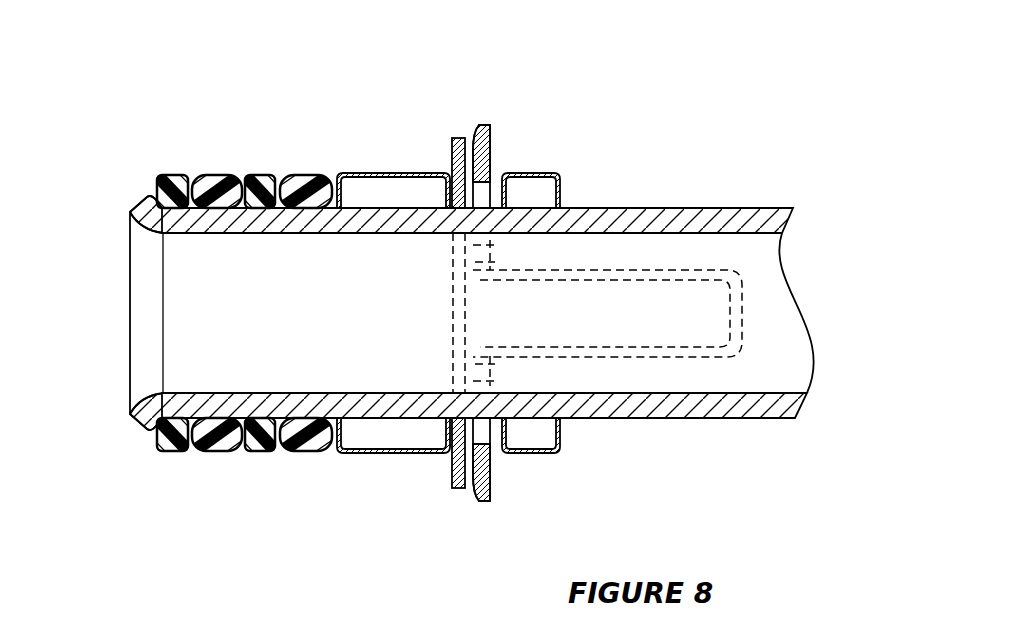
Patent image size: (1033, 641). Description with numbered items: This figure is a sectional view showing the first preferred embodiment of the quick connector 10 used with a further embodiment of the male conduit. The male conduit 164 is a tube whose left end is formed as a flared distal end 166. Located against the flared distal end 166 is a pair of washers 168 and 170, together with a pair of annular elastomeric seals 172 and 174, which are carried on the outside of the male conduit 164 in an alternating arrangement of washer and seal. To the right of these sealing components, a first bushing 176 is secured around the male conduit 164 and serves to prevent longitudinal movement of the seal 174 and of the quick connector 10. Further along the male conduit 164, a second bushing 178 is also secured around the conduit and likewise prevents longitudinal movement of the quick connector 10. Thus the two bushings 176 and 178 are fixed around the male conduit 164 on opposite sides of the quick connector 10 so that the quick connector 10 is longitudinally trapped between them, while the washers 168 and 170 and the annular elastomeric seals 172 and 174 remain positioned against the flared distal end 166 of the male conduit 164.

The quick connector 10 is at (486, 96).
The male conduit 164 is at (620, 218).
The flared distal end 166 is at (143, 203).
The washer 168 is at (175, 452).
The washer 170 is at (265, 452).
The annular elastomeric seal 172 is at (218, 452).
The annular elastomeric seal 174 is at (310, 452).
The first bushing 176 is at (395, 455).
The second bushing 178 is at (533, 455).